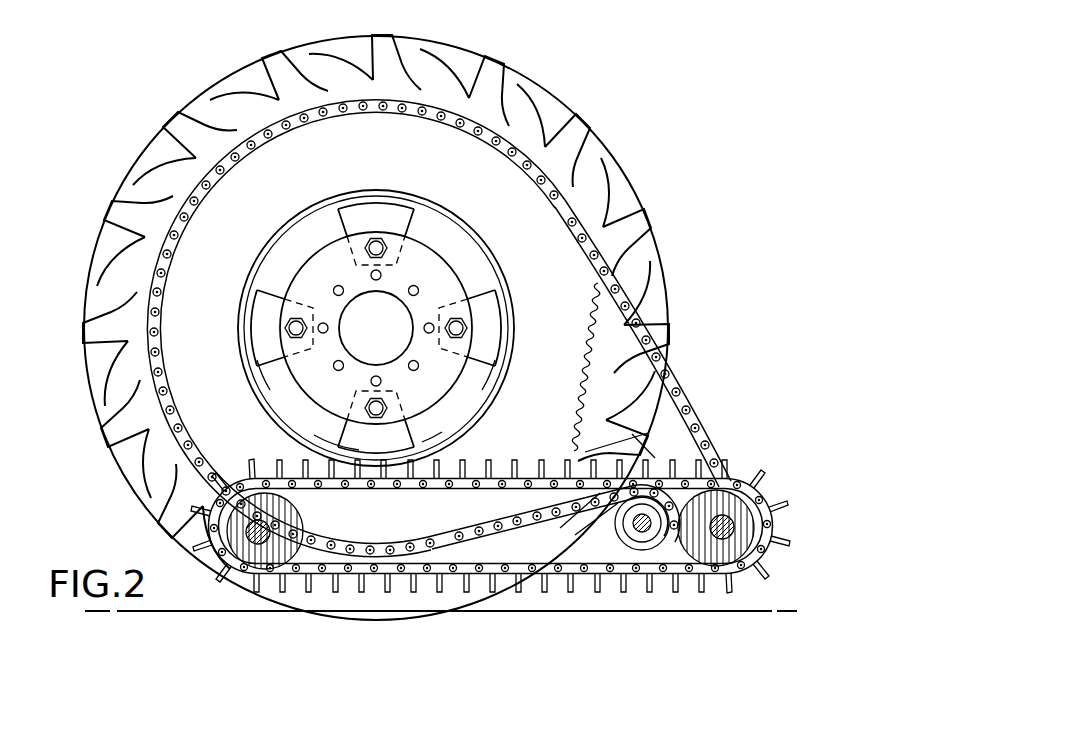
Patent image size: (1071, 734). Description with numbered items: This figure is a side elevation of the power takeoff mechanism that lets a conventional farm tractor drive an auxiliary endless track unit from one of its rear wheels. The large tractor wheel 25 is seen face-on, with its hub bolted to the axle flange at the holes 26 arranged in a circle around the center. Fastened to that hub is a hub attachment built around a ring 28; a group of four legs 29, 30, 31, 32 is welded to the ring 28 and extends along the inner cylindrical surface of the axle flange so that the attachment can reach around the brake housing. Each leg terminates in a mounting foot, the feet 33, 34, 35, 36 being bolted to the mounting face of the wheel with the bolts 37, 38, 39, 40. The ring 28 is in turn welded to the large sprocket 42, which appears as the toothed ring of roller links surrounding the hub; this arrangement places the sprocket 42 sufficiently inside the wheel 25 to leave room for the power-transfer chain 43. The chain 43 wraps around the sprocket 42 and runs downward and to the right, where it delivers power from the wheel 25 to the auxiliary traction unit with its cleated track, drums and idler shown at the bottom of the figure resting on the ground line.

The wheel 25 is at (640, 195).
The large sprocket 42 is at (186, 263).
The ring 28 is at (453, 238).
The mounting foot 35 is at (338, 221).
The leg 30 is at (404, 213).
The leg 29 is at (258, 336).
The leg 31 is at (500, 323).
The leg 32 is at (309, 436).
The mounting foot 33 is at (460, 438).
The mounting foot 34 is at (268, 366).
The mounting foot 36 is at (486, 360).
The holes 26 is at (367, 277).
The bolt 37 is at (297, 316).
The bolt 38 is at (382, 242).
The bolt 39 is at (452, 305).
The bolt 40 is at (368, 408).
The power-transfer chain 43 is at (712, 432).